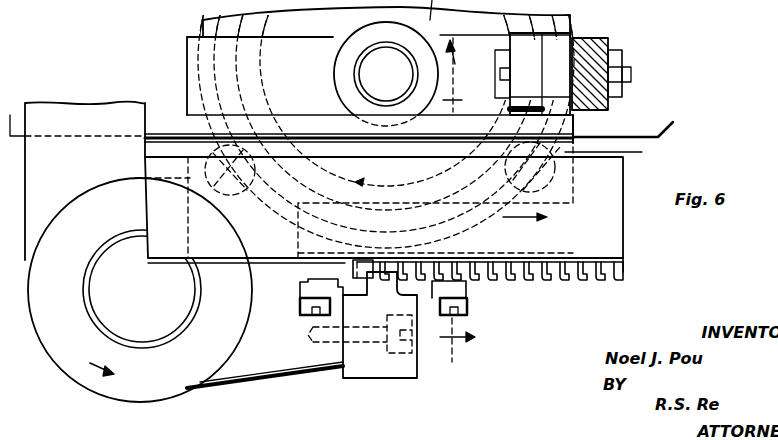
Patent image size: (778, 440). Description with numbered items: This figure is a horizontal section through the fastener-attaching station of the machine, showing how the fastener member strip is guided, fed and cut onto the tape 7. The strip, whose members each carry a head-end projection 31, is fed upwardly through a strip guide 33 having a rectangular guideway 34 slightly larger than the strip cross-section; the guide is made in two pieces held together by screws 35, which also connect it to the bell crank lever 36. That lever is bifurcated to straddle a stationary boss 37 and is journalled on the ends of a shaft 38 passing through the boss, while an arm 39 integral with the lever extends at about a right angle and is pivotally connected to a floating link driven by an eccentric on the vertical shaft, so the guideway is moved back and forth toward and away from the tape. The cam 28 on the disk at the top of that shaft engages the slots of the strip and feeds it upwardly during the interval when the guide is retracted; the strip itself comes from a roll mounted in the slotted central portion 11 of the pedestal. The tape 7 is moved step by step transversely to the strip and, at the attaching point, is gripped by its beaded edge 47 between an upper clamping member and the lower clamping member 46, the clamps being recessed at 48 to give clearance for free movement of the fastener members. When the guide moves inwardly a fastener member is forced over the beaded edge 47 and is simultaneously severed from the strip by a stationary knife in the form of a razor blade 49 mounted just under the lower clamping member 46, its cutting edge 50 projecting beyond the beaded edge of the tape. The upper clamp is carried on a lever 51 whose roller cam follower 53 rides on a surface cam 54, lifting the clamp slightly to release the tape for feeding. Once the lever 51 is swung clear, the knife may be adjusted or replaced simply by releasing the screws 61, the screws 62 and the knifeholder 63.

The tape 7 is at (604, 218).
The slotted central portion 11 is at (464, 201).
The cam 28 is at (205, 28).
The projection 31 is at (609, 272).
The strip guide 33 is at (387, 363).
The guideway 34 is at (378, 272).
The screws 35 is at (412, 350).
The bell crank lever 36 is at (278, 365).
The stationary boss 37 is at (253, 277).
The shaft 38 is at (150, 327).
The arm 39 is at (75, 185).
The lower clamping member 46 is at (618, 152).
The beaded edge 47 is at (625, 258).
The recess 48 is at (525, 230).
The razor blade 49 is at (306, 273).
The cutting edge 50 is at (355, 262).
The lever 51 is at (612, 42).
The roller cam follower 53 is at (535, 48).
The surface cam 54 is at (512, 22).
The screws 61 is at (583, 135).
The screws 62 is at (302, 313).
The knifeholder 63 is at (462, 292).